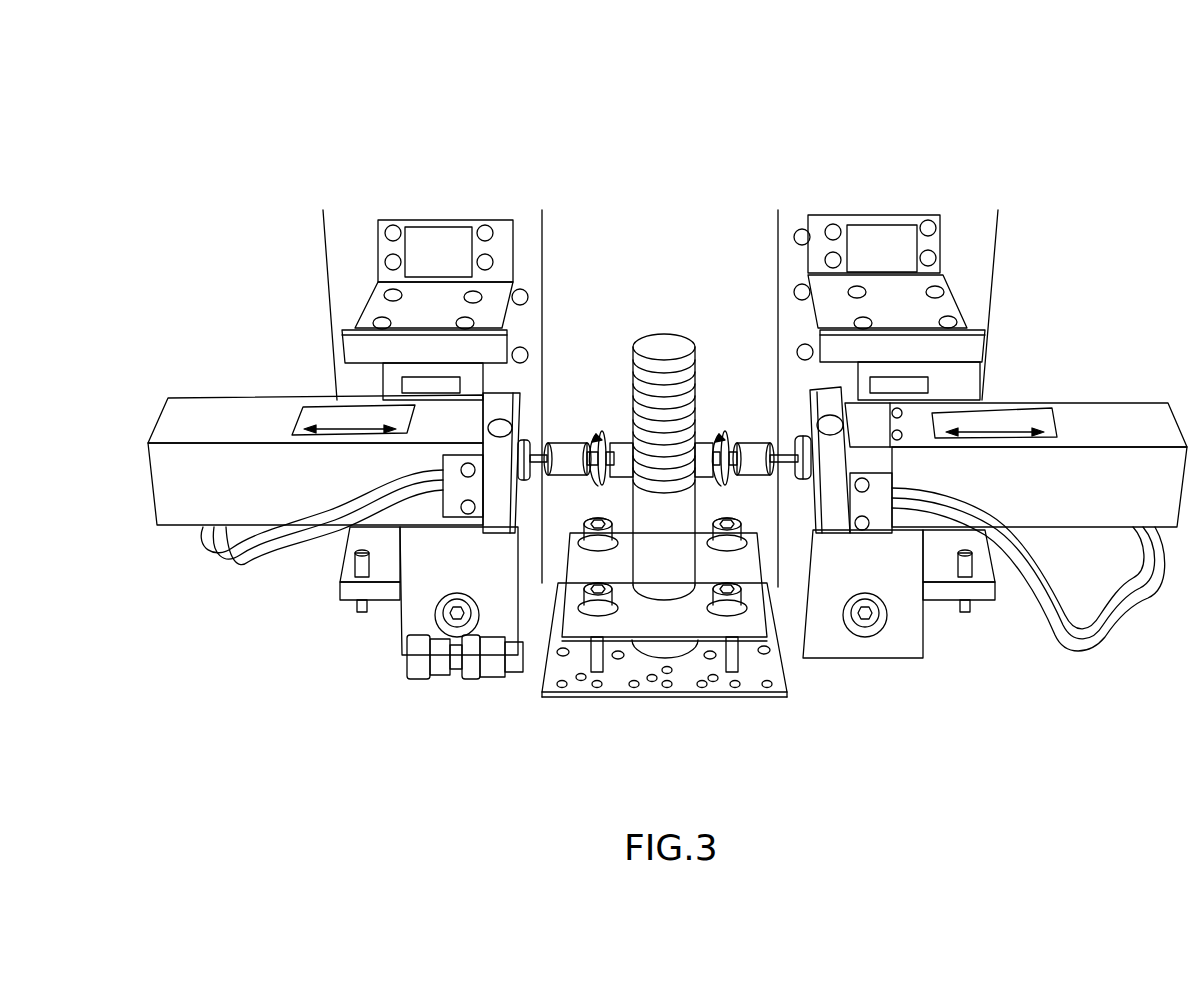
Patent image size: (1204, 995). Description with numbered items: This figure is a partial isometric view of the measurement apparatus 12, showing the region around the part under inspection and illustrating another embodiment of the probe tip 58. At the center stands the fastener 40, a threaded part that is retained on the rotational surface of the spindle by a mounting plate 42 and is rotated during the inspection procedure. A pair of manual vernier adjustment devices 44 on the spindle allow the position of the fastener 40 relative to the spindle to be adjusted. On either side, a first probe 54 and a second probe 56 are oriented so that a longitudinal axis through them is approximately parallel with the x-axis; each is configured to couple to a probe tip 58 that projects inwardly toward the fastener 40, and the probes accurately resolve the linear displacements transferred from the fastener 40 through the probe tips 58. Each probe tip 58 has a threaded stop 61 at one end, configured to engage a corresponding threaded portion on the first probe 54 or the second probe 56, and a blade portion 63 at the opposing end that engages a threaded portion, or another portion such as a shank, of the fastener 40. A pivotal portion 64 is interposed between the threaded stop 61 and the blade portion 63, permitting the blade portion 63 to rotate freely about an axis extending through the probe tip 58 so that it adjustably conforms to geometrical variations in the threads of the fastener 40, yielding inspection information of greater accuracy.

The measurement apparatus 12 is at (667, 385).
The probe tip 58 is at (570, 327).
The first probe 54 is at (272, 490).
The second probe 56 is at (1067, 502).
The fastener 40 is at (680, 552).
The mounting plate 42 is at (573, 622).
The manual vernier adjustment device 44 is at (417, 668).
The threaded stop 61 is at (538, 482).
The blade portion 63 is at (625, 453).
The pivotal portion 64 is at (560, 453).